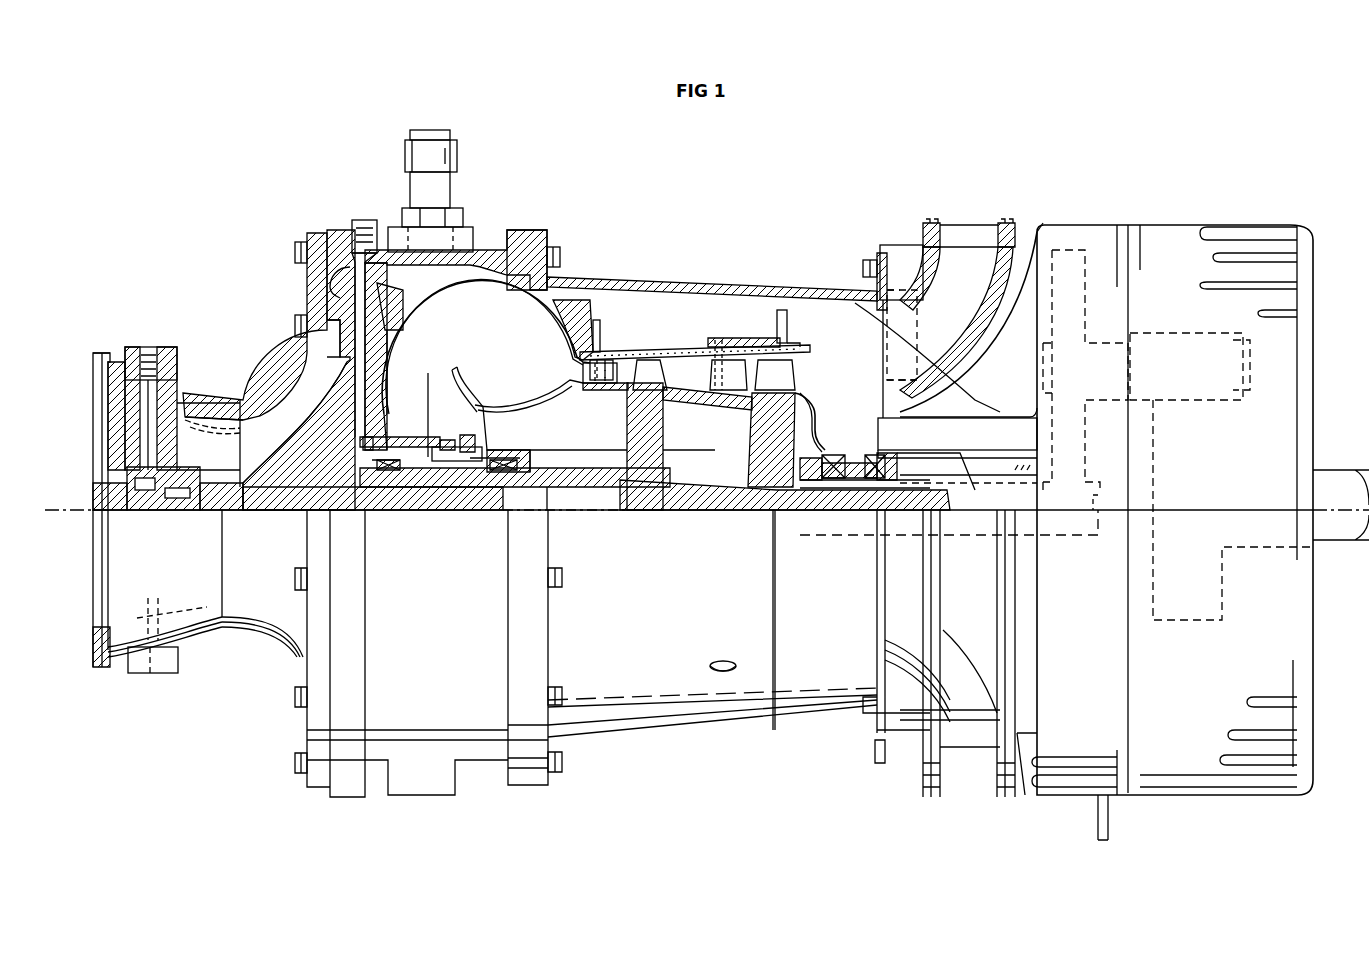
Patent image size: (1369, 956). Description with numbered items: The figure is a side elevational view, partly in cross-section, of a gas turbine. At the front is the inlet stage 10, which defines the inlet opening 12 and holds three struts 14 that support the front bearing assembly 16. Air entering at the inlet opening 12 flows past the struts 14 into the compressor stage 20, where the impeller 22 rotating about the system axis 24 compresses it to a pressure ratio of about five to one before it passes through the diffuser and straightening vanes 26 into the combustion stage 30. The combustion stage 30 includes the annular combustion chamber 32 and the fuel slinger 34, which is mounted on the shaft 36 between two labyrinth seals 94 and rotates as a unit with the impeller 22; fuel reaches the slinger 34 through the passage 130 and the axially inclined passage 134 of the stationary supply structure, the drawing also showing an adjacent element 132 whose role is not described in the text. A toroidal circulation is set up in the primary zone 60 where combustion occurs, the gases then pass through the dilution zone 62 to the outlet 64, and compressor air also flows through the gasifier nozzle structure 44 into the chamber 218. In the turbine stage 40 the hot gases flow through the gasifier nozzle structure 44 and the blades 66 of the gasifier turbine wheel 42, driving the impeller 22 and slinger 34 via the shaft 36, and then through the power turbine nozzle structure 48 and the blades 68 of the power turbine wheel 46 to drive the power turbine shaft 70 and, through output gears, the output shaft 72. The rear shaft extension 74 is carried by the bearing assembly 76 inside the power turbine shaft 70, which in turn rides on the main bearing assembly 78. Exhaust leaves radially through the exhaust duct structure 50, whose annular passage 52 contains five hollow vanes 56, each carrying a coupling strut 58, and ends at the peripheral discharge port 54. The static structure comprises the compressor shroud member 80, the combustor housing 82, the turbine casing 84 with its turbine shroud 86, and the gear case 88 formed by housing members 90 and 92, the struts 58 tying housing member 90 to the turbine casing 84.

The inlet stage 10 is at (112, 338).
The inlet opening 12 is at (90, 415).
The struts 14 is at (177, 403).
The front bearing assembly 16 is at (181, 514).
The compressor stage 20 is at (268, 378).
The impeller 22 is at (300, 360).
The system axis 24 is at (66, 515).
The diffuser and straightening vanes 26 is at (335, 300).
The combustion stage 30 is at (380, 198).
The annular combustion chamber 32 is at (490, 280).
The fuel slinger 34 is at (437, 433).
The shaft 36 is at (586, 488).
The turbine or expansion stage 40 is at (657, 265).
The gasifier turbine wheel 42 is at (655, 467).
The gasifier nozzle structure 44 is at (612, 372).
The power turbine wheel 46 is at (763, 440).
The power turbine nozzle structure 48 is at (733, 378).
The exhaust duct structure 50 is at (905, 226).
The annular passage 52 is at (847, 373).
The discharge port 54 is at (957, 790).
The hollow vanes 56 is at (897, 345).
The coupling strut 58 is at (897, 255).
The primary zone 60 is at (442, 405).
The dilution zone 62 is at (517, 363).
The outlet 64 is at (583, 372).
The blades 66 is at (648, 375).
The blades 68 is at (777, 383).
The power turbine shaft 70 is at (835, 540).
The output shaft 72 is at (1341, 472).
The rear shaft extension 74 is at (735, 495).
The bearing assembly 76 is at (885, 487).
The main bearing assembly 78 is at (880, 465).
The compressor shroud member 80 is at (278, 636).
The combustor housing 82 is at (494, 772).
The turbine casing 84 is at (708, 735).
The turbine shroud 86 is at (694, 350).
The gear case 88 is at (1126, 222).
The housing member 90 is at (1073, 796).
The housing member 92 is at (1255, 793).
The labyrinth seals 94 is at (403, 471).
The passage 130 is at (305, 240).
The bolt 132 is at (359, 228).
The passage 134 is at (372, 470).
The chamber 218 is at (591, 456).